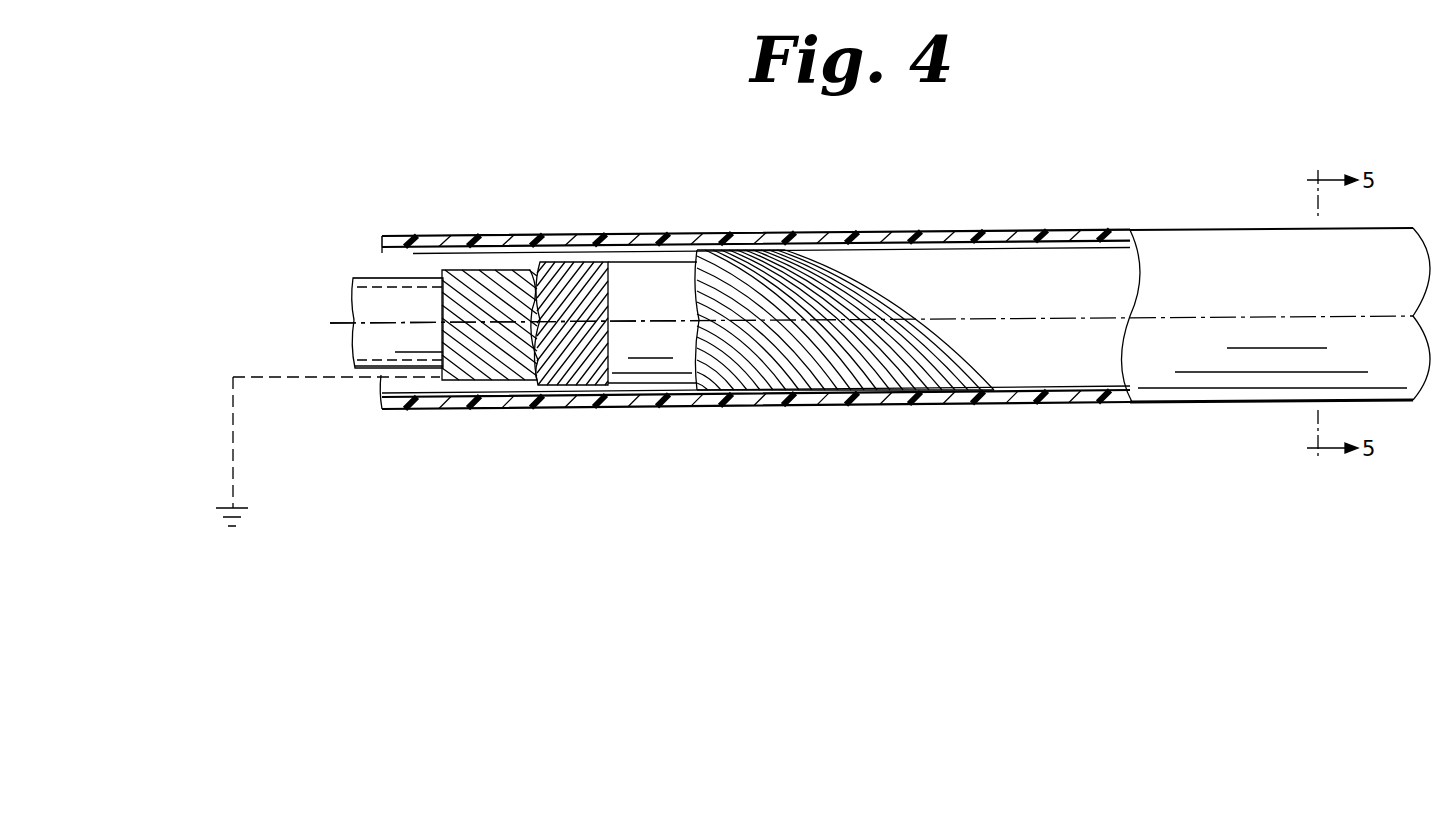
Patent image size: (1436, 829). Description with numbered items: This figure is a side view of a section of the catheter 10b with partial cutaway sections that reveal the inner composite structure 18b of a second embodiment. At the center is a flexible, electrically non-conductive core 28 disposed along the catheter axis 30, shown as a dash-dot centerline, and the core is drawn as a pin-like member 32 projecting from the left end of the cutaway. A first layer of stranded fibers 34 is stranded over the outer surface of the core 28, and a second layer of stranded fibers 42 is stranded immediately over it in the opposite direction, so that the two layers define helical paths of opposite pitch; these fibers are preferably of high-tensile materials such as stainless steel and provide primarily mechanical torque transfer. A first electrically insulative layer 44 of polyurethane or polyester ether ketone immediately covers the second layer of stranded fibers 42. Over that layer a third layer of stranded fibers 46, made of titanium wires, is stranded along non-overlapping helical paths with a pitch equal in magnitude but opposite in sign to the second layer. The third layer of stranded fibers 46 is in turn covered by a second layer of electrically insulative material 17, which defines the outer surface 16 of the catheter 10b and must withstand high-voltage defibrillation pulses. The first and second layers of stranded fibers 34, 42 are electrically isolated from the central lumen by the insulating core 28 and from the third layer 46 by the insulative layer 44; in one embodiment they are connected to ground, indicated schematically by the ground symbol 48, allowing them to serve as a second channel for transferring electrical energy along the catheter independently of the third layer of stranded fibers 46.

The catheter 10b is at (662, 152).
The outer surface 16 is at (1195, 240).
The second layer of electrically insulative material 17 is at (767, 232).
The inner composite structure 18b is at (292, 270).
The central flexible, electrically non-conductive core 28 is at (268, 310).
The catheter axis 30 is at (335, 323).
The center pin 32 is at (358, 275).
The first layer of stranded fibers 34 is at (490, 388).
The second layer of stranded fibers 42 is at (580, 392).
The first electrically insulative layer 44 is at (640, 383).
The third layer of stranded fibers 46 is at (738, 400).
The ground connection 48 is at (233, 453).